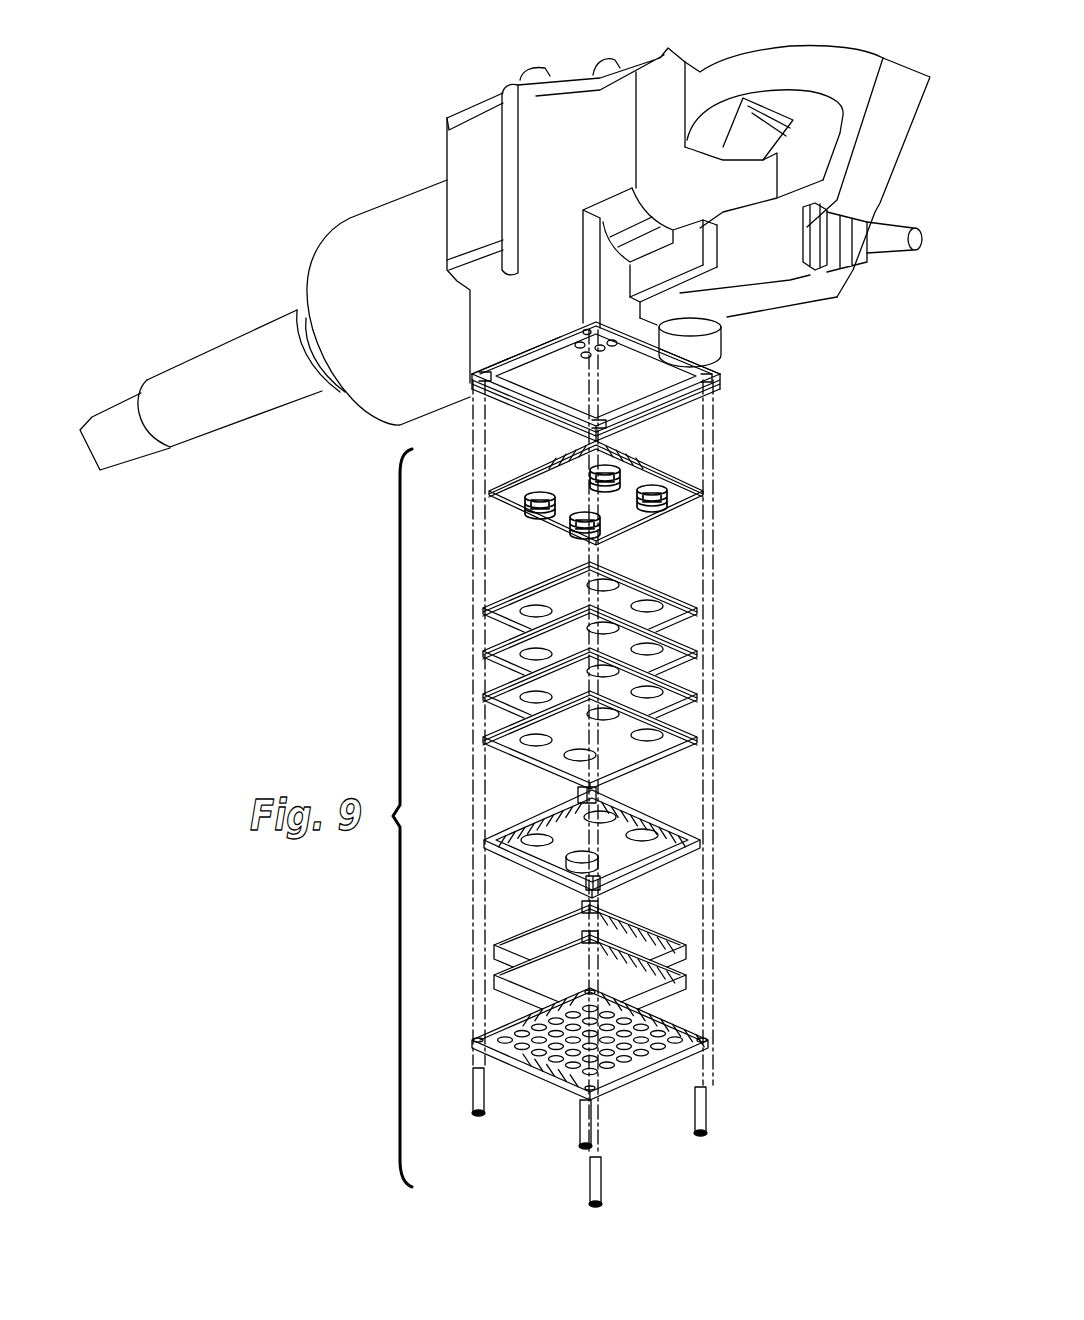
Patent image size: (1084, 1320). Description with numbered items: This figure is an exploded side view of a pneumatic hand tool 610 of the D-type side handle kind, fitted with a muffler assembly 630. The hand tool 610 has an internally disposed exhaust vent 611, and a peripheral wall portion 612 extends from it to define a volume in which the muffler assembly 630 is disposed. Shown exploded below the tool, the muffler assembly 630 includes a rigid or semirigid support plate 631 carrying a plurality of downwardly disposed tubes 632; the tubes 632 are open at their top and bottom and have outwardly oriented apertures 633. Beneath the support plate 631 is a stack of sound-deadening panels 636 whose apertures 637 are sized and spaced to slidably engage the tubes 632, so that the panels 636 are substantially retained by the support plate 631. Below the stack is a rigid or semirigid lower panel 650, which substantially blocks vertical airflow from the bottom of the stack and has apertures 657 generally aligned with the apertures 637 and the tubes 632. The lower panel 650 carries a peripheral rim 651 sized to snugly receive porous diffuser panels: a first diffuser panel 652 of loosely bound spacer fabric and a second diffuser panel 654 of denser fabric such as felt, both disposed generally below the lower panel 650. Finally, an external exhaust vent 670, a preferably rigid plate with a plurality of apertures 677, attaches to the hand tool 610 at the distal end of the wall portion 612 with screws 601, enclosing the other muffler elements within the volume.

The screws 601 is at (472, 1093).
The hand tool 610 is at (505, 258).
The exhaust vent 611 is at (623, 360).
The peripheral wall portion 612 is at (537, 388).
The muffler assembly 630 is at (788, 1151).
The support plate 631 is at (642, 459).
The tubes 632 is at (530, 513).
The apertures 633 is at (538, 498).
The sound-deadening panels 636 is at (683, 613).
The apertures 637 is at (538, 615).
The lower panel 650 is at (710, 850).
The peripheral rim 651 is at (608, 845).
The first diffuser panel 652 is at (673, 955).
The second diffuser panel 654 is at (663, 993).
The apertures 657 is at (533, 842).
The external exhaust vent 670 is at (590, 1060).
The apertures 677 is at (553, 1060).